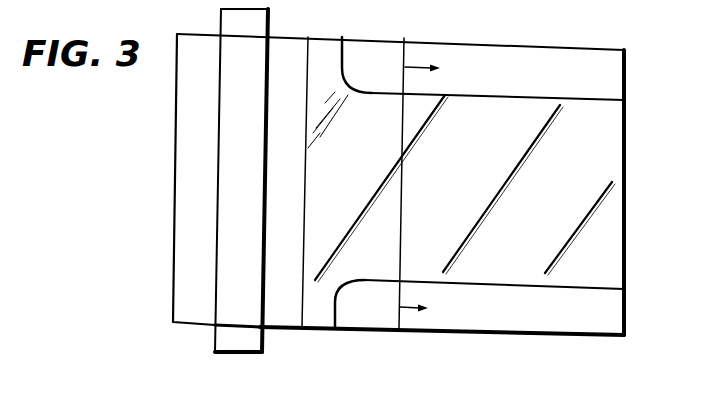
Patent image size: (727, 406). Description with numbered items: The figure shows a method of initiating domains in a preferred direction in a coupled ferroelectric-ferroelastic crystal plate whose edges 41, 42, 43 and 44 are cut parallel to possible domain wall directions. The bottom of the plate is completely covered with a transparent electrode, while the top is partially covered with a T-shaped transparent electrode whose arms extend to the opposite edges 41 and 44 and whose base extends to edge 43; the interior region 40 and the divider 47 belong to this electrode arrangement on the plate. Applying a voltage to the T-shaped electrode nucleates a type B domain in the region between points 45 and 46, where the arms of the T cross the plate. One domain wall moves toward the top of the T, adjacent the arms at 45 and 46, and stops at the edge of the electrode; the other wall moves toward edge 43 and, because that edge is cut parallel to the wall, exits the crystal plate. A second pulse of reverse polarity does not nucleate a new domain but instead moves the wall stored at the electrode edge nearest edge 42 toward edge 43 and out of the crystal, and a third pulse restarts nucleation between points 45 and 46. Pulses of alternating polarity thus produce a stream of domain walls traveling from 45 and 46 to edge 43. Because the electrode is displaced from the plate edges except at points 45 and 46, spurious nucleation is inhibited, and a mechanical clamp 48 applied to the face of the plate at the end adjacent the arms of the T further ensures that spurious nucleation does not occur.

The upper passage 40 is at (623, 63).
The edge of the crystal plate 41 is at (605, 155).
The edge of the crystal plate 42 is at (175, 155).
The edge of the crystal plate 43 is at (625, 317).
The edge of the crystal plate 44 is at (537, 337).
The nucleation point 45 is at (318, 330).
The nucleation point 46 is at (325, 37).
The divider wall 47 is at (400, 331).
The mechanical clamp 48 is at (215, 346).